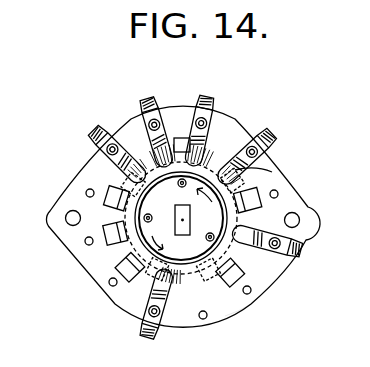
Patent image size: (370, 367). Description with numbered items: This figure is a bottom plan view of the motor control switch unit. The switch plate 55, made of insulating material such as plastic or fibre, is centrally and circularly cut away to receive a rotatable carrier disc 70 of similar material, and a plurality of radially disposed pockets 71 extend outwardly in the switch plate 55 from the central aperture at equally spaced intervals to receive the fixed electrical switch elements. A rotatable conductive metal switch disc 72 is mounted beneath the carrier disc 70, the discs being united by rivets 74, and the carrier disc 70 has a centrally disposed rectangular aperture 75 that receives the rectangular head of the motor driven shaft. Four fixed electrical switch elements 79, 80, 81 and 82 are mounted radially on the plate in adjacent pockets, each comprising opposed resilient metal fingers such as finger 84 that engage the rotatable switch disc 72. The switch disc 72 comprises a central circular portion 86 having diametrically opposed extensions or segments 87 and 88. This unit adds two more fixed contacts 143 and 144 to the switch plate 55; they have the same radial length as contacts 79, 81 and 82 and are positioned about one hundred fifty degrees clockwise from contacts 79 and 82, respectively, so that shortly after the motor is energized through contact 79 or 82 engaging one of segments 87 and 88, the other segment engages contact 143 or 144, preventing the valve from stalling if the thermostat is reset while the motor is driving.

The switch plate 55 is at (245, 310).
The carrier disc 70 is at (285, 200).
The radially disposed pockets 71 is at (232, 282).
The conductive metal switch disc 72 is at (119, 198).
The rivets 74 is at (149, 214).
The rectangular aperture 75 is at (180, 220).
The fixed electrical switch element 79 is at (266, 151).
The fixed electrical switch element 80 is at (210, 134).
The fixed electrical switch element 81 is at (148, 125).
The fixed electrical switch element 82 is at (118, 158).
The metal finger 84 is at (273, 172).
The central circular portion 86 is at (116, 248).
The extension or segment 87 is at (182, 140).
The extension or segment 88 is at (195, 282).
The fixed switch element or contact 143 is at (162, 297).
The fixed switch element or contact 144 is at (265, 253).